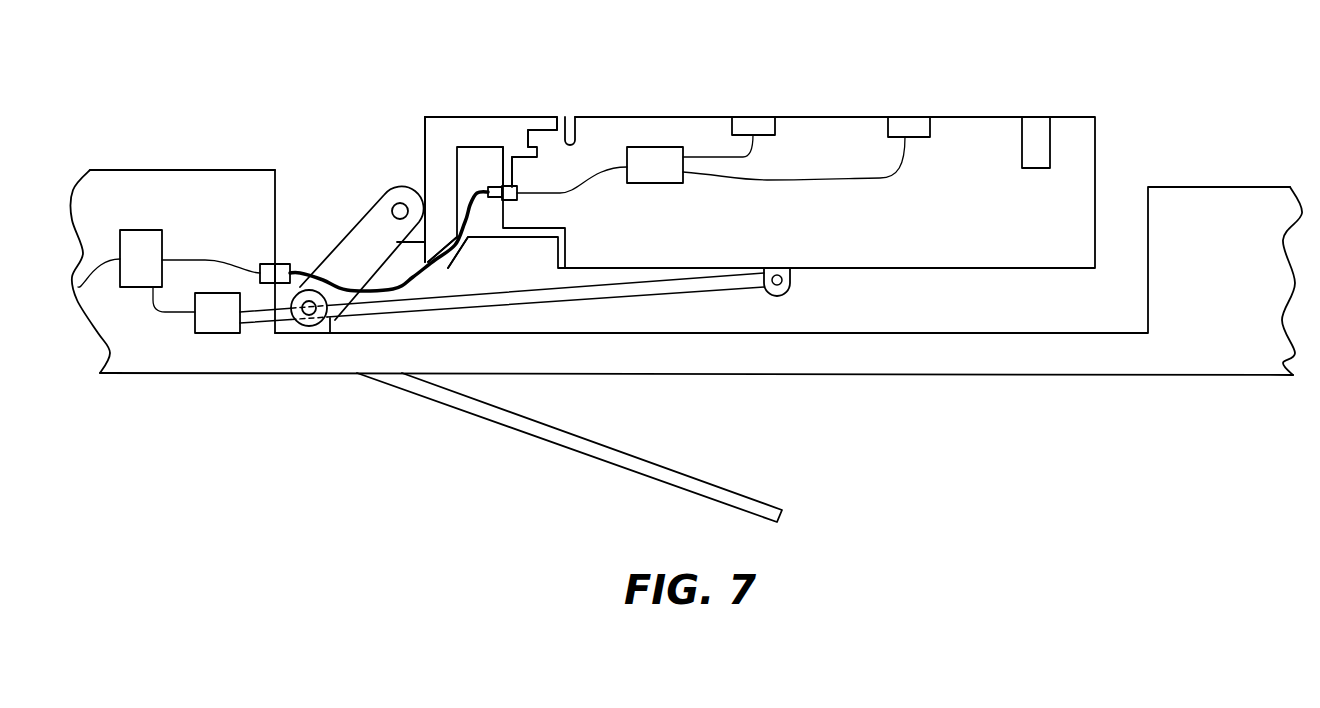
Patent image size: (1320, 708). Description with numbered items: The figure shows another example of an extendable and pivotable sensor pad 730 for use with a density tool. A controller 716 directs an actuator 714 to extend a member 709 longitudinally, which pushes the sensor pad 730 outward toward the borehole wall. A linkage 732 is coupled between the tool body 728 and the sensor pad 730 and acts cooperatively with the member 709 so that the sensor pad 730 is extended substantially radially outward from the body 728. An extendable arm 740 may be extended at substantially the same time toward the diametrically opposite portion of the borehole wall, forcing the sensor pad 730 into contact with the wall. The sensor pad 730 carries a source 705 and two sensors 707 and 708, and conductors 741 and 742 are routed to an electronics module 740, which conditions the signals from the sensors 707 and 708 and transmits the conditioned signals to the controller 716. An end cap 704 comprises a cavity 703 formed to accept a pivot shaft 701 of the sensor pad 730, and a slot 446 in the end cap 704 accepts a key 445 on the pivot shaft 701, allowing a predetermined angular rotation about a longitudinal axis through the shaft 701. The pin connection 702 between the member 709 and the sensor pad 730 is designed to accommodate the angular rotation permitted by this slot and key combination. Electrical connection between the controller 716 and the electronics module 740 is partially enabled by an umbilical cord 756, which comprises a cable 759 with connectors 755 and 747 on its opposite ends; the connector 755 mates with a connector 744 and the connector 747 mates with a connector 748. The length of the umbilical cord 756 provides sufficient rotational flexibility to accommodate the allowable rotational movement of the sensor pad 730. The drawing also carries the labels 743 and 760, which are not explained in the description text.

The key 445 is at (575, 117).
The slot 446 is at (546, 129).
The pivot shaft 701 is at (507, 157).
The pin connection 702 is at (777, 294).
The cavity 703 is at (453, 163).
The end cap 704 is at (435, 113).
The source 705 is at (1033, 117).
The sensor 707 is at (908, 117).
The sensor 708 is at (755, 117).
The member 709 is at (695, 295).
The actuator 714 is at (218, 333).
The controller 716 is at (138, 230).
The body 728 is at (990, 376).
The sensor pad 730 is at (1095, 132).
The linkage 732 is at (336, 248).
The electronics module 740 is at (657, 147).
The conductor 741 is at (830, 178).
The conductor 742 is at (707, 156).
The wire 743 is at (606, 166).
The connector 744 is at (511, 186).
The connector 747 is at (281, 263).
The connector 748 is at (262, 263).
The connector 755 is at (499, 186).
The umbilical cord 756 is at (383, 281).
The cable 759 is at (404, 248).
The slot 760 is at (462, 242).